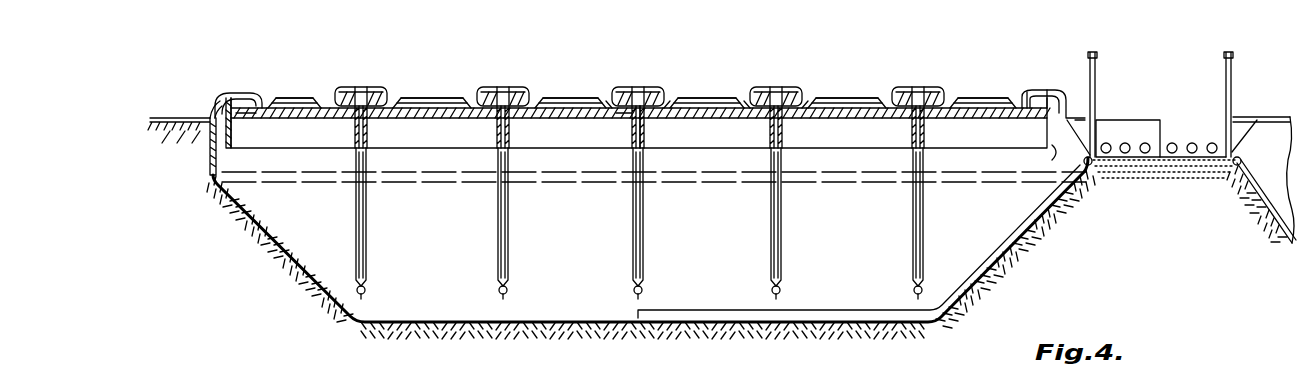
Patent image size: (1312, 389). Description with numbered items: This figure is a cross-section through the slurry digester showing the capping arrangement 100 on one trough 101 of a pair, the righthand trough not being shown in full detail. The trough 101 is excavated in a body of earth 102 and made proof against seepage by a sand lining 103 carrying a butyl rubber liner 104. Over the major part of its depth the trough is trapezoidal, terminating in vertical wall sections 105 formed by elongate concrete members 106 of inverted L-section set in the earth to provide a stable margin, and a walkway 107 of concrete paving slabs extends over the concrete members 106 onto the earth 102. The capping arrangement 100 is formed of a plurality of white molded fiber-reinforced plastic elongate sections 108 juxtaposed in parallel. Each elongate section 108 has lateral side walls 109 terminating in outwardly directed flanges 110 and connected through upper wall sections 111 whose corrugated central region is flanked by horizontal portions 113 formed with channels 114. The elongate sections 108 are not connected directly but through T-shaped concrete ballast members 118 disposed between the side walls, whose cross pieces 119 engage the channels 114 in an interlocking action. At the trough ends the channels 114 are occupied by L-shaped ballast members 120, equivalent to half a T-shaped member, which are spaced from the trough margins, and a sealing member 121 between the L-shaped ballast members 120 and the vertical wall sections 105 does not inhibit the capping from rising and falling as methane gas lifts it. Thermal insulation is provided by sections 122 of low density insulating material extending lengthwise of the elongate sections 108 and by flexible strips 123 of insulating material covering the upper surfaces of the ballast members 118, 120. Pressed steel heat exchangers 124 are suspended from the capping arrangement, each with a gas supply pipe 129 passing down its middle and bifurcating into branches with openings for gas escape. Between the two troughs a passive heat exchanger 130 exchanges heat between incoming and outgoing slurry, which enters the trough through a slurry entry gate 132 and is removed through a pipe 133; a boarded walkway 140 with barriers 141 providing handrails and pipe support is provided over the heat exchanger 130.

The capping arrangement 100 is at (569, 139).
The trough 101 is at (1040, 262).
The body of earth 102 is at (1170, 319).
The sand lining 103 is at (985, 300).
The butyl rubber liner 104 is at (568, 334).
The vertical wall section 105 is at (210, 170).
The elongate concrete member 106 is at (231, 140).
The walkway 107 is at (187, 117).
The elongate section 108 is at (323, 132).
The lateral side wall 109 is at (233, 125).
The outwardly directed flange 110 is at (508, 150).
The upper wall section 111 is at (586, 100).
The horizontal portion 113 is at (652, 142).
The channel 114 is at (670, 104).
The ballast member 118 is at (522, 98).
The cross piece 119 is at (246, 96).
The L-shaped ballast member 120 is at (1038, 94).
The sealing member 121 is at (218, 104).
The section of insulating material 122 is at (838, 109).
The flexible strip of insulating material 123 is at (238, 98).
The heat exchanger 124 is at (770, 232).
The gas supply pipe 129 is at (912, 232).
The passive heat exchanger 130 is at (1163, 160).
The slurry entry gate 132 is at (1250, 120).
The pipe 133 is at (832, 322).
The boarded walkway 140 is at (1137, 120).
The barrier 141 is at (1097, 60).